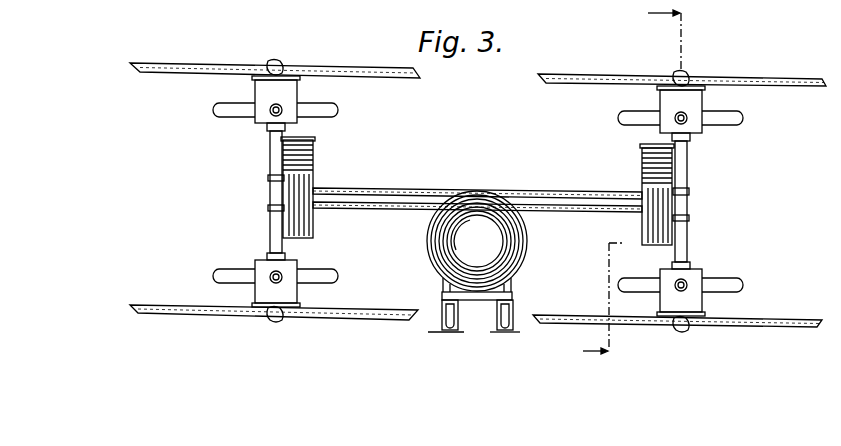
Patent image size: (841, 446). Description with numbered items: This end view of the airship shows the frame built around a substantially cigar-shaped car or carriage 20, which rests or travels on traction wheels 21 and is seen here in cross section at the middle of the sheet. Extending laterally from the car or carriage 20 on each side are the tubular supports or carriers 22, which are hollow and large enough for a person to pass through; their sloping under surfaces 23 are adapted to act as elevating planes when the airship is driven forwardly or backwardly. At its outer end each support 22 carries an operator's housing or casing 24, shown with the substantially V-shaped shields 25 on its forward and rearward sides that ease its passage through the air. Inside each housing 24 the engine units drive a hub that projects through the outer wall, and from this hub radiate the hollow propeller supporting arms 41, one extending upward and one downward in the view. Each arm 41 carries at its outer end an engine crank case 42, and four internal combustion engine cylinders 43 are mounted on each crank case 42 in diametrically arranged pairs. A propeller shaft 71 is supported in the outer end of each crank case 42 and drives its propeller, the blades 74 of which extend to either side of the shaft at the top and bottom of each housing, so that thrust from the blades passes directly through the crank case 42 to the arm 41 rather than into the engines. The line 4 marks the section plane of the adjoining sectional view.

The section line 4- 4 is at (640, 187).
The car or carriage 20 is at (500, 244).
The traction wheels 21 is at (451, 334).
The tubular supports or carriers 22 is at (390, 189).
The sloping under surfaces 23 is at (378, 209).
The operator's housing or casing 24 is at (314, 156).
The V-shaped shields 25 is at (305, 228).
The propeller supporting arms 41 is at (284, 137).
The engine crank case 42 is at (478, 196).
The internal combustion engine cylinders 43 is at (316, 110).
The propeller shaft 71 is at (277, 62).
The blade 74 is at (179, 72).